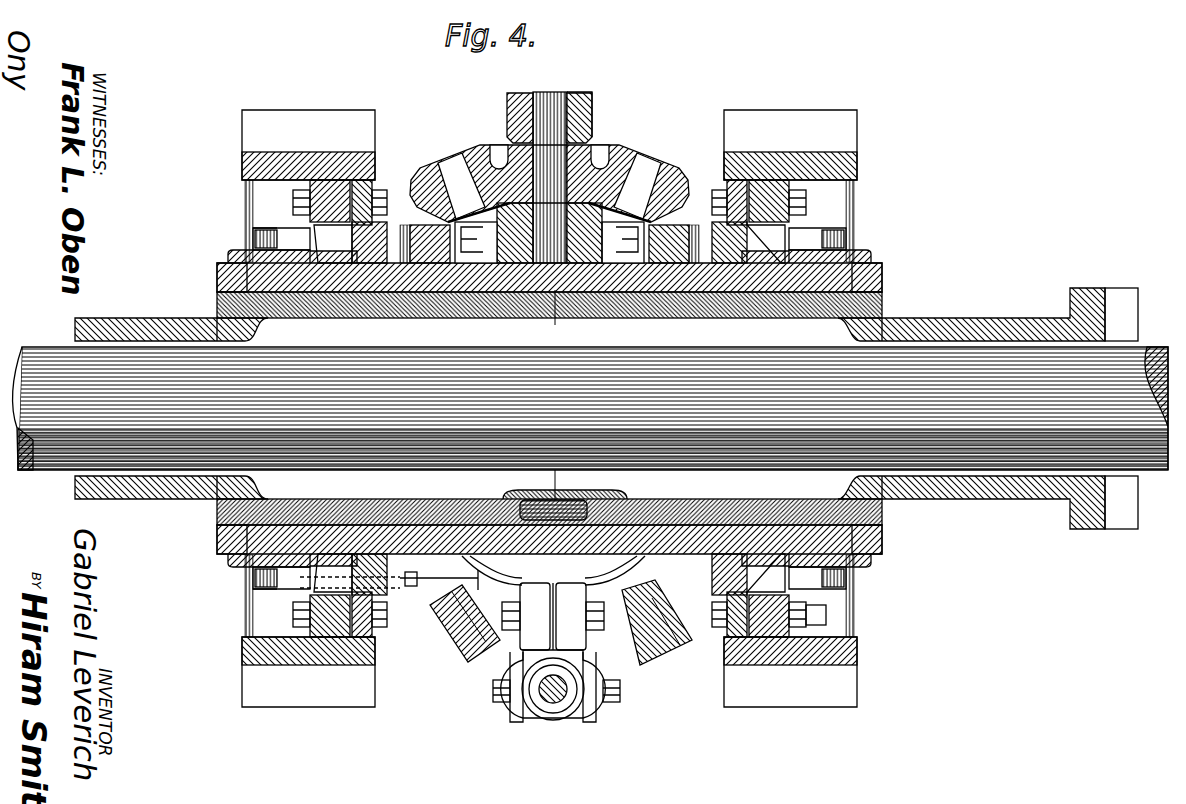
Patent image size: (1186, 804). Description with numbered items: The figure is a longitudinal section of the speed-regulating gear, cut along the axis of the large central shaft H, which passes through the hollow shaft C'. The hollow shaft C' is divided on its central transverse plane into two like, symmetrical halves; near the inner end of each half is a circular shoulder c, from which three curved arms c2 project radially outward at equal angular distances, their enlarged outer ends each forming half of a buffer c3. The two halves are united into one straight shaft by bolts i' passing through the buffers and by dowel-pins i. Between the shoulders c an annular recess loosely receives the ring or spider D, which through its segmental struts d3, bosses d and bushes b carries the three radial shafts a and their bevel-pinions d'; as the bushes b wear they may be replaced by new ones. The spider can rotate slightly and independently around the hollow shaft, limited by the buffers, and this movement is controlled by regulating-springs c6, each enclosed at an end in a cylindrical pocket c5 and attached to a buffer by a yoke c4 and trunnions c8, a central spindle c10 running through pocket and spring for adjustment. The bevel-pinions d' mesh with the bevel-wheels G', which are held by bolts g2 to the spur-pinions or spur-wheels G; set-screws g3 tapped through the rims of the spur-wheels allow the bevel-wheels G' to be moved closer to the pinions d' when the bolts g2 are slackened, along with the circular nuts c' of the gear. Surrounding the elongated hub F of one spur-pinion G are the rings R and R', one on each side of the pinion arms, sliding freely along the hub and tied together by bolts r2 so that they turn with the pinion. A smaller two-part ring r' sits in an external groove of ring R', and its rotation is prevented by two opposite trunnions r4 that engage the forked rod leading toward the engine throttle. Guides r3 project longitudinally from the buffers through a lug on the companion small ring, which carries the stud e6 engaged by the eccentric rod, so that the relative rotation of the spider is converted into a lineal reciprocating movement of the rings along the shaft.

The shaft H is at (590, 408).
The hollow shaft C' is at (606, 409).
The ring or spider D is at (549, 409).
The elongated hub F is at (806, 252).
The circular nut c' is at (548, 409).
The spur-pinion G is at (549, 408).
The bevel-wheel G' is at (549, 408).
The bolt g2 is at (292, 202).
The set-screw g3 is at (826, 614).
The ring R is at (549, 408).
The ring R' is at (514, 406).
The smaller ring r' is at (549, 412).
The trunnion r4 is at (232, 594).
The bolt r2 is at (350, 585).
The stud e6 is at (439, 584).
The radial shaft a is at (550, 177).
The bush b is at (532, 93).
The segmental strut d3 is at (582, 100).
The bevel-pinion d' is at (549, 190).
The boss d is at (476, 242).
The dowel-pin i is at (560, 495).
The circular shoulder c is at (542, 407).
The curved arm c2 is at (553, 570).
The buffer c3 is at (553, 616).
The bolt i' is at (566, 624).
The spindle c10 is at (578, 676).
The rear pocket c5 is at (582, 718).
The regulating-spring c6 is at (553, 712).
The yoke c4 is at (512, 722).
The trunnion c8 is at (493, 690).
The guide r3 is at (561, 622).